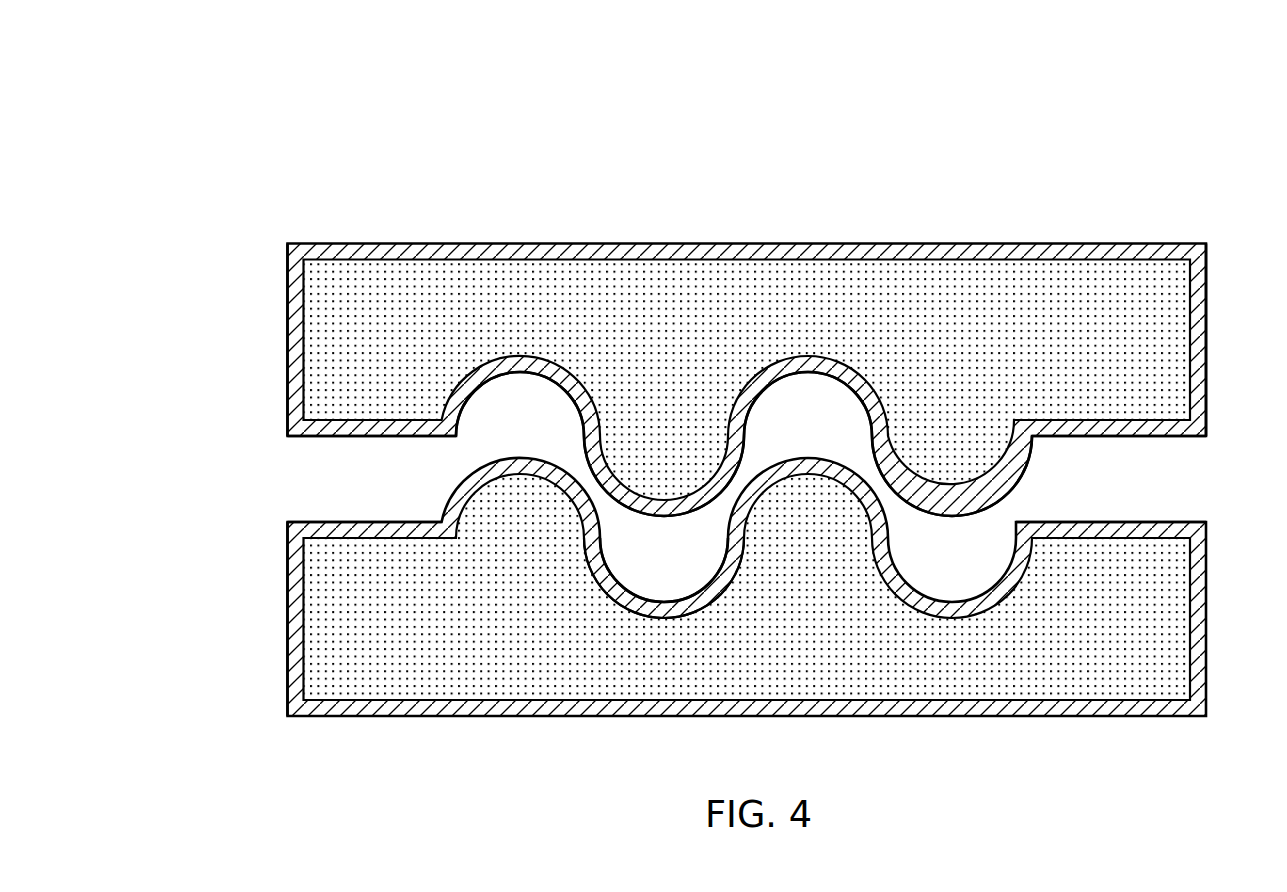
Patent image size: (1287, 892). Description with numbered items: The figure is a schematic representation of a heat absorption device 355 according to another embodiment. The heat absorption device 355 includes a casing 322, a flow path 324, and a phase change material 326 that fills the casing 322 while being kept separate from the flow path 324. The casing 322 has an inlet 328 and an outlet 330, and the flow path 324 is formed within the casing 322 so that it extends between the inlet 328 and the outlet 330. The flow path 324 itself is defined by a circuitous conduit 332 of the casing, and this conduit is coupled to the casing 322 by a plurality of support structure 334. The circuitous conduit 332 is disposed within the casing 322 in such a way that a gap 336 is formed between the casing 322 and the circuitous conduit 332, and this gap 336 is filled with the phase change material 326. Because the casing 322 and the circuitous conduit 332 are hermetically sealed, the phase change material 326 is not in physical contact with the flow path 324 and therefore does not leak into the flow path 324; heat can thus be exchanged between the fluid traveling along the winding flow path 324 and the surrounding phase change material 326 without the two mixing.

The heat absorption device 355 is at (253, 75).
The casing 322 is at (639, 243).
The flow path 324 is at (515, 407).
The phase change material 326 is at (935, 290).
The inlet 328 is at (1197, 482).
The outlet 330 is at (292, 479).
The circuitous conduit 332 is at (681, 567).
The support structure 334 is at (287, 332).
The gap 336 is at (1182, 338).